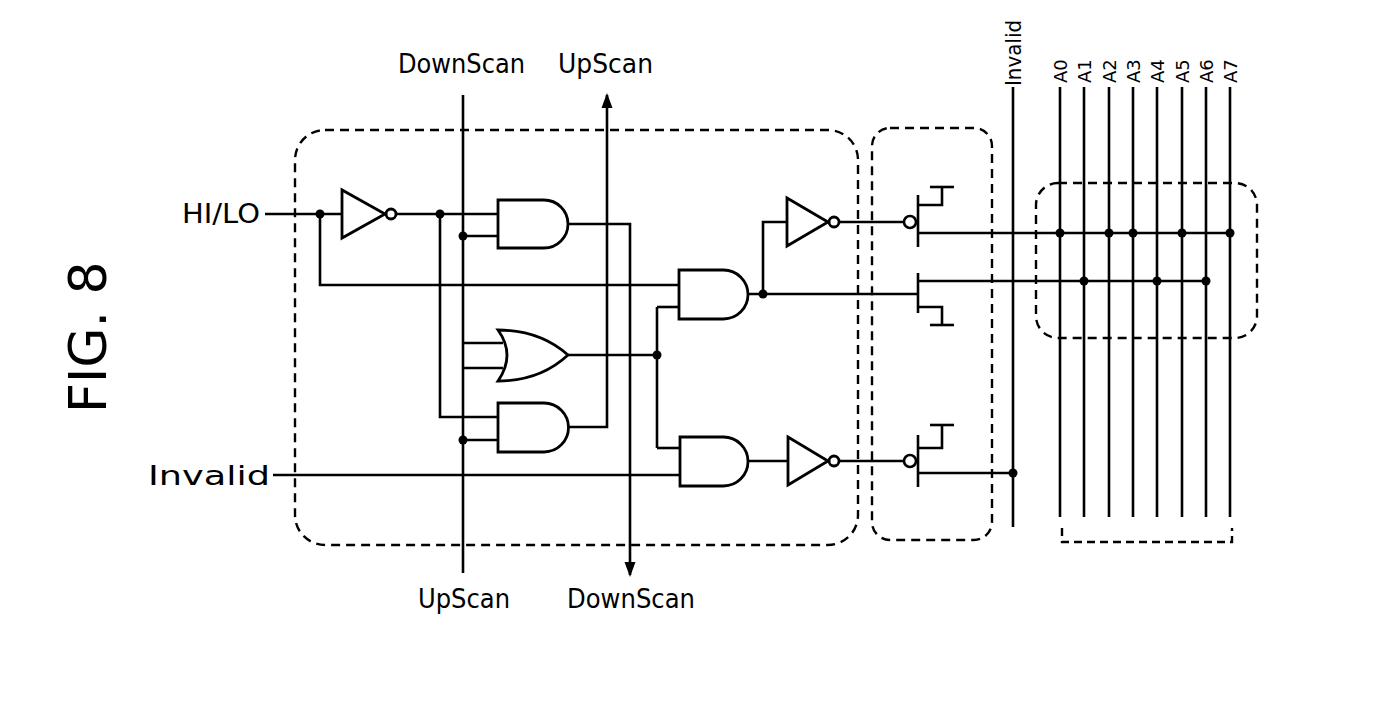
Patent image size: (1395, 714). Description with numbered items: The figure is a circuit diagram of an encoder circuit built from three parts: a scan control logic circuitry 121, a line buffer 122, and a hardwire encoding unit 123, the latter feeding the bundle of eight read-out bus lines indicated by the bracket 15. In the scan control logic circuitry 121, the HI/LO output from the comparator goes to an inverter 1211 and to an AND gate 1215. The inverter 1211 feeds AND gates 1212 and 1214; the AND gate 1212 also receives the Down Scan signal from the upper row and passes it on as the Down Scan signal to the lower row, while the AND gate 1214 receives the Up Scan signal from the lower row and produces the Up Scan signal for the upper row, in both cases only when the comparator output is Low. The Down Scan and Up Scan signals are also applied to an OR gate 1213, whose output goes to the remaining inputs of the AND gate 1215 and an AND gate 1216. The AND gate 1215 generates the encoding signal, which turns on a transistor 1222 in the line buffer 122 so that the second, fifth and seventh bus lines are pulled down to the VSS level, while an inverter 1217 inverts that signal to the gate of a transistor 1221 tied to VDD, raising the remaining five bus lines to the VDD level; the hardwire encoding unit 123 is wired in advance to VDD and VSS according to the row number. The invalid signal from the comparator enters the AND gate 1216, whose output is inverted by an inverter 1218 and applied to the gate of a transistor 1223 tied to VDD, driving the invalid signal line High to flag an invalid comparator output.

The scan control logic circuitry 121 is at (755, 128).
The line buffer 122 is at (925, 127).
The hardwire encoding unit 123 is at (1257, 256).
The address lines A0-A7 15 is at (1147, 558).
The inverter 1211 is at (362, 190).
The AND gate 1212 is at (530, 200).
The OR gate 1213 is at (510, 330).
The AND gate 1214 is at (512, 452).
The AND gate 1215 is at (703, 270).
The AND gate 1216 is at (707, 437).
The inverter 1217 is at (803, 198).
The inverter 1218 is at (790, 468).
The transistor 1221 is at (916, 234).
The transistor 1222 is at (916, 307).
The transistor 1223 is at (916, 448).